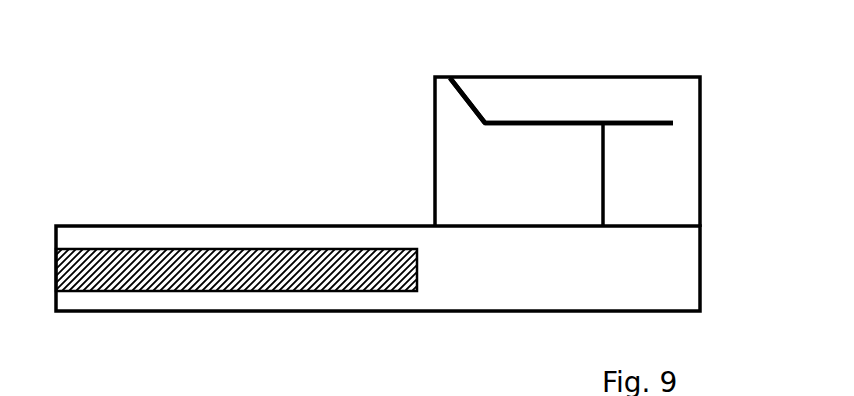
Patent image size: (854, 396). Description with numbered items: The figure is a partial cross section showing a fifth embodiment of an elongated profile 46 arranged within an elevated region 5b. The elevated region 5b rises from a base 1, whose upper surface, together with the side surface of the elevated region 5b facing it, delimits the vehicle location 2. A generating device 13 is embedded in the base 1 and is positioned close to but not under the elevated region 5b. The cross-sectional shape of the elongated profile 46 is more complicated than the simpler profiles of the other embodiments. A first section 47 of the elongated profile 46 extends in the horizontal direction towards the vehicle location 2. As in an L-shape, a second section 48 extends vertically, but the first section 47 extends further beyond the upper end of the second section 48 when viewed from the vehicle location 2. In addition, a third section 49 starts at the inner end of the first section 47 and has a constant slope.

The base 1 is at (480, 313).
The vehicle location 2 is at (224, 147).
The generating device 13 is at (278, 278).
The elevated region 5b is at (700, 152).
The elongated profile 46 is at (540, 120).
The first section 47 is at (575, 127).
The second section 48 is at (607, 188).
The third section 49 is at (480, 97).